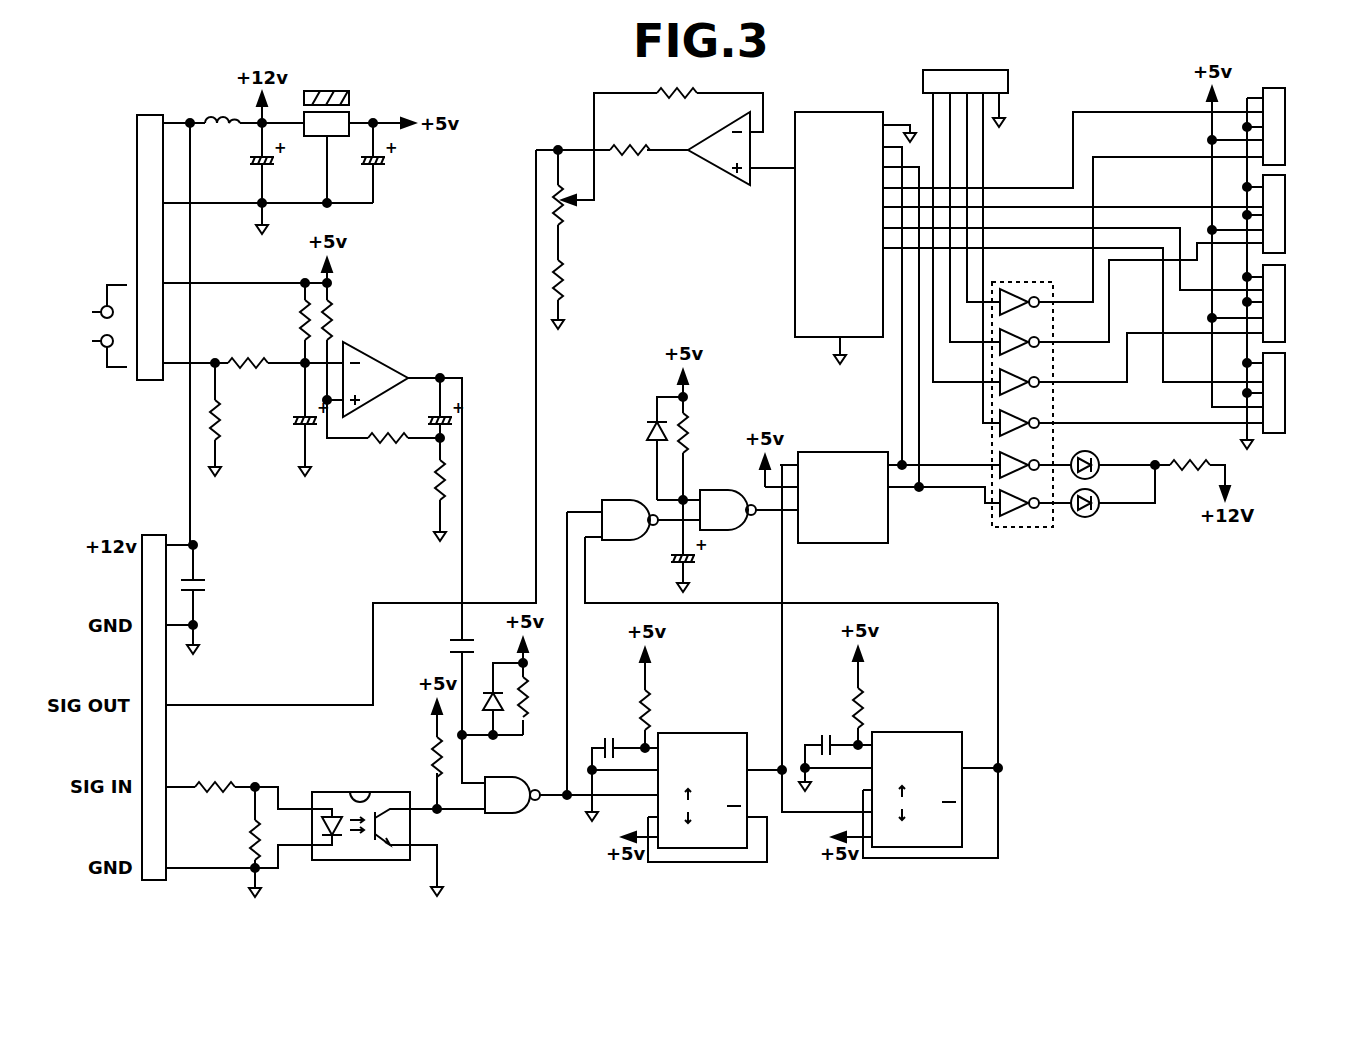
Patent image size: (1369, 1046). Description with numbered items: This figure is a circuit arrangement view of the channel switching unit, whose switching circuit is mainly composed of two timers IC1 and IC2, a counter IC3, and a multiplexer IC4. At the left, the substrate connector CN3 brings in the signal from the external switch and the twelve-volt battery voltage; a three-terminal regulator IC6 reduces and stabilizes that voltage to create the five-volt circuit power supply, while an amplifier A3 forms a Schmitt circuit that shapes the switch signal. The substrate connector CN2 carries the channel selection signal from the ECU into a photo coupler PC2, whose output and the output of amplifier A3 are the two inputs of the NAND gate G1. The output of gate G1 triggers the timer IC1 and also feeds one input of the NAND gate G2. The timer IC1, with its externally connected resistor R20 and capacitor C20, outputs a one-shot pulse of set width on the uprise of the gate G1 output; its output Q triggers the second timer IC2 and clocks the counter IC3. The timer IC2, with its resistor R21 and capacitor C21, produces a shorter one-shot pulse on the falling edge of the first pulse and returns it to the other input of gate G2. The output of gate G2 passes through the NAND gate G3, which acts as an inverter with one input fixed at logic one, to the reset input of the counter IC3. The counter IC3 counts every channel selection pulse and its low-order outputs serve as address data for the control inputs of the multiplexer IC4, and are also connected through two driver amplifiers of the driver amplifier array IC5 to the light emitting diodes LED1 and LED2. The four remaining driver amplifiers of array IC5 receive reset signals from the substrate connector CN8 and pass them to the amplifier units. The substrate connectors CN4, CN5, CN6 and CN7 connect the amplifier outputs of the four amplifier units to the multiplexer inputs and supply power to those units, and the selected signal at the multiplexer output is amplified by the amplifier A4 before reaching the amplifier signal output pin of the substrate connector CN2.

The substrate connector CN3 is at (148, 235).
The three-terminal regulator IC6 is at (317, 126).
The amplifier for a Schmitt circuit A3 is at (375, 376).
The substrate connector CN2 is at (153, 695).
The photo coupler PC2 is at (361, 812).
The 2-input NAND gate G1 is at (512, 782).
The 2-input NAND gate G2 is at (628, 507).
The two-input NAND gate G3 is at (728, 496).
The timer IC1 is at (702, 777).
The timer IC2 is at (917, 776).
The counter IC3 is at (843, 485).
The multiplexer IC4 is at (839, 211).
The driver amplifier array IC5 is at (1022, 391).
The amplifier for amplification A4 is at (710, 148).
The resistor R20 is at (668, 707).
The resistor R21 is at (882, 705).
The capacitor C20 is at (592, 734).
The capacitor C21 is at (808, 733).
The substrate connector CN8 is at (988, 82).
The substrate connector CN4 is at (1306, 126).
The substrate connector CN5 is at (1306, 214).
The substrate connector CN6 is at (1306, 303).
The substrate connector CN7 is at (1306, 393).
The light emitting diode LED1 is at (1114, 457).
The light emitting diode LED2 is at (1114, 496).